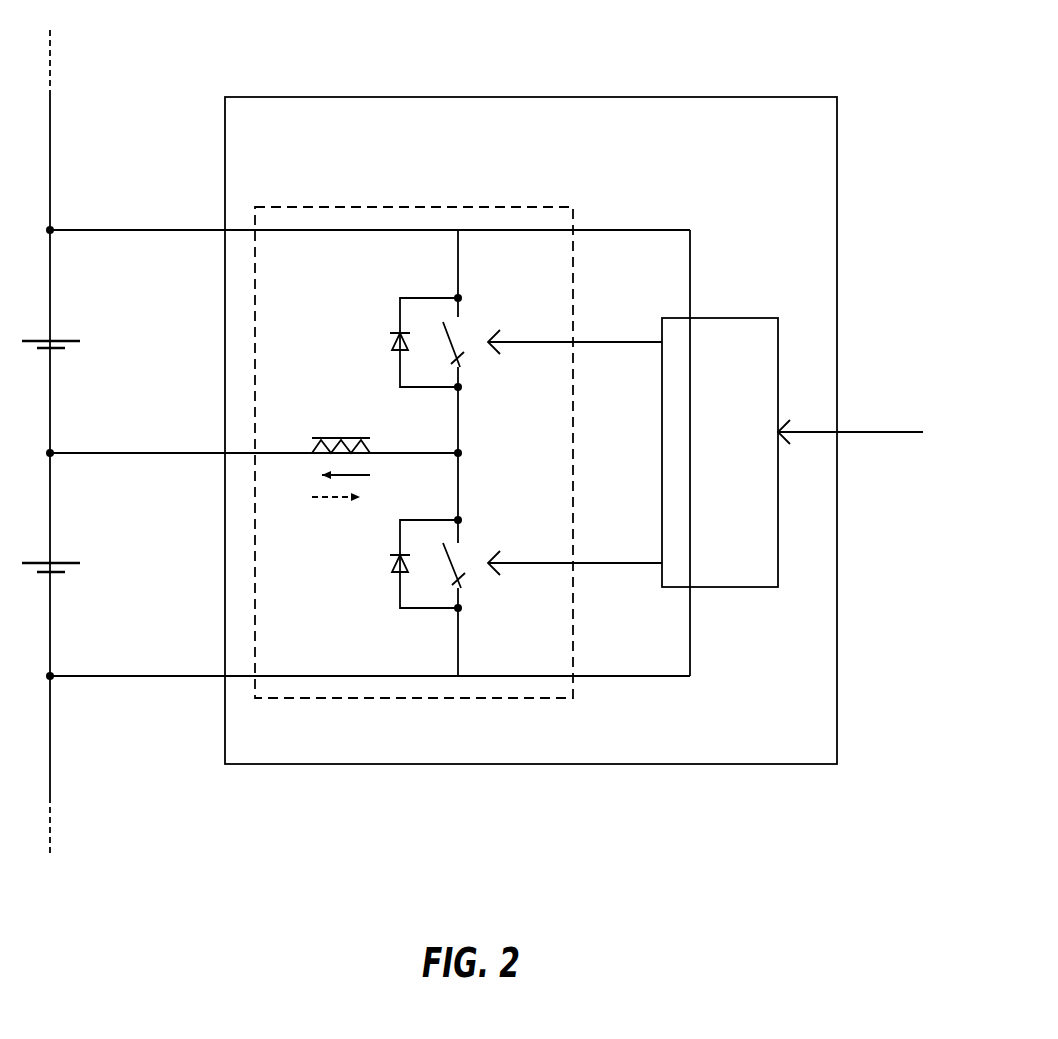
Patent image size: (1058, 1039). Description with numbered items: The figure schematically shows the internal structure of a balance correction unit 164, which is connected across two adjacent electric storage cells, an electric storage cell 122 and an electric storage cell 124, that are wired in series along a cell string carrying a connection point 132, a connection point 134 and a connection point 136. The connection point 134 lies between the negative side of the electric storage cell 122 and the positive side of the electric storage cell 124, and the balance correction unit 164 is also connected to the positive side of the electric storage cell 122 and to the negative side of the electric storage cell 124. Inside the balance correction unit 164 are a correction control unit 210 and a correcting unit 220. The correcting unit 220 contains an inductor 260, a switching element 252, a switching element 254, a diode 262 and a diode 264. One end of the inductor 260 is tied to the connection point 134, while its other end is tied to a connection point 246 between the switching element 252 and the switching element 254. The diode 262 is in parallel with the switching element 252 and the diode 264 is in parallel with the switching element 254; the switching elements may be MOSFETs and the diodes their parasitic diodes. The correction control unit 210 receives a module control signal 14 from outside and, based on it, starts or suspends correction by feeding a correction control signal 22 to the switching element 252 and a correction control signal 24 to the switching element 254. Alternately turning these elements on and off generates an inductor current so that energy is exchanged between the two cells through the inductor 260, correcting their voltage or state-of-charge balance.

The module control signal 14 is at (892, 427).
The correction control signal 22 is at (603, 342).
The correction control signal 24 is at (603, 563).
The electric storage cell 122 is at (57, 328).
The electric storage cell 124 is at (57, 550).
The connection point 132 is at (57, 217).
The connection point 134 is at (57, 440).
The connection point 136 is at (53, 668).
The balance correction unit 164 is at (712, 97).
The correction control unit 210 is at (742, 318).
The correcting unit 220 is at (487, 700).
The connection point 246 is at (465, 450).
The switching element 252 is at (468, 337).
The switching element 254 is at (468, 560).
The inductor 260 is at (343, 420).
The diode 262 is at (390, 326).
The diode 264 is at (388, 585).